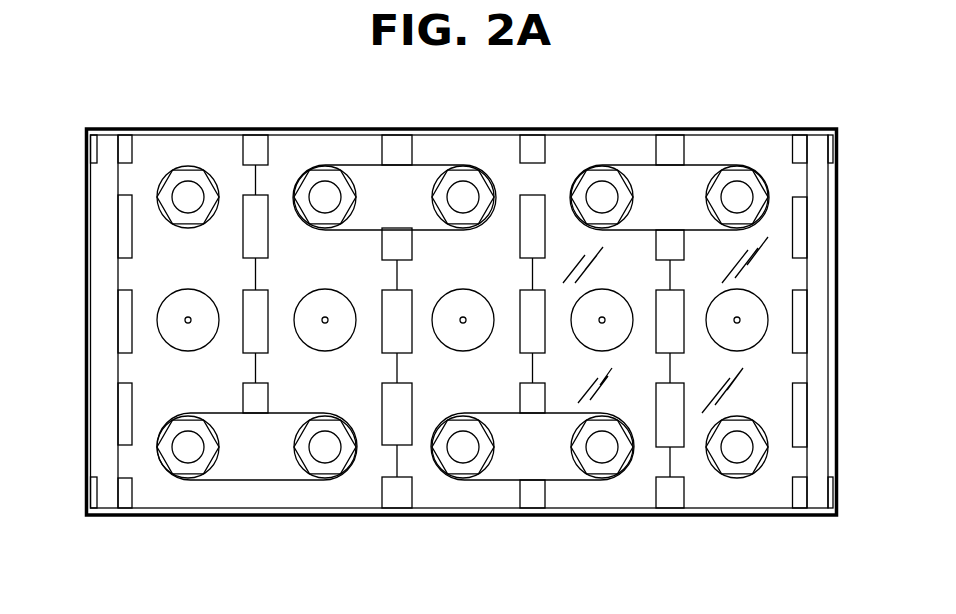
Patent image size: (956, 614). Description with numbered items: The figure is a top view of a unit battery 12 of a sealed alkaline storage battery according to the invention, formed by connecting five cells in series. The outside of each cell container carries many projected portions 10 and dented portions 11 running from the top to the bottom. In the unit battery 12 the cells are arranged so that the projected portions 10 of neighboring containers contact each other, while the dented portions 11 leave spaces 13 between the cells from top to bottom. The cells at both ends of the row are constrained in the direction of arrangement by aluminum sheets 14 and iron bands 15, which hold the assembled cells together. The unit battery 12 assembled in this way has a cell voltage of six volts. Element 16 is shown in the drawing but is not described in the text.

The projected portions 10 is at (388, 466).
The dented portions 11 is at (244, 404).
The unit battery 12 is at (743, 156).
The spaces 13 is at (533, 410).
The aluminum sheets 14 is at (103, 266).
The iron bands 15 is at (134, 517).
The connecting plate 16 is at (237, 472).